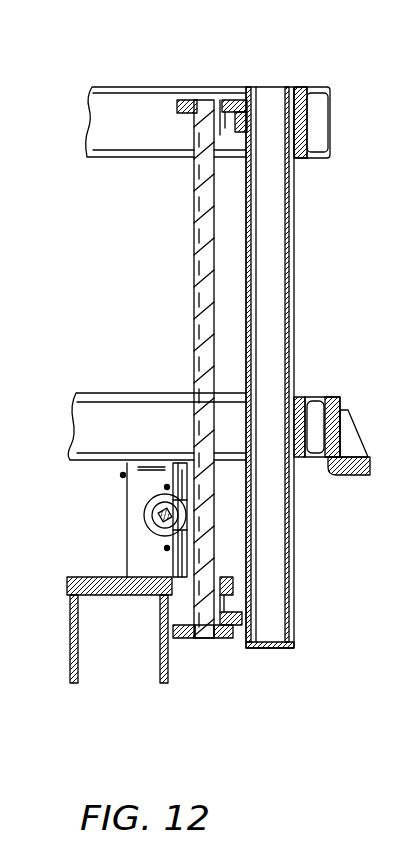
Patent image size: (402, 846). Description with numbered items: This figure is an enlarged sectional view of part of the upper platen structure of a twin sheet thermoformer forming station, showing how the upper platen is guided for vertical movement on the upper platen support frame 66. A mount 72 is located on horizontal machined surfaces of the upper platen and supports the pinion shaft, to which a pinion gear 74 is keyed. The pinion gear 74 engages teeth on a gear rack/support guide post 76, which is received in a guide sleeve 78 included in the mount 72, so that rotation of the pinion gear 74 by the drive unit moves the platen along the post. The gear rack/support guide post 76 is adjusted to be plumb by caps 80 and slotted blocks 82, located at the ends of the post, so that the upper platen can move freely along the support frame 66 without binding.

The upper platen support frame 66 is at (296, 242).
The mount 72 is at (125, 478).
The pinion gear 74 is at (146, 526).
The gear rack/support guide post 76 is at (194, 250).
The guide sleeve 78 is at (173, 565).
The cap 80 is at (187, 105).
The slotted block 82 is at (227, 133).